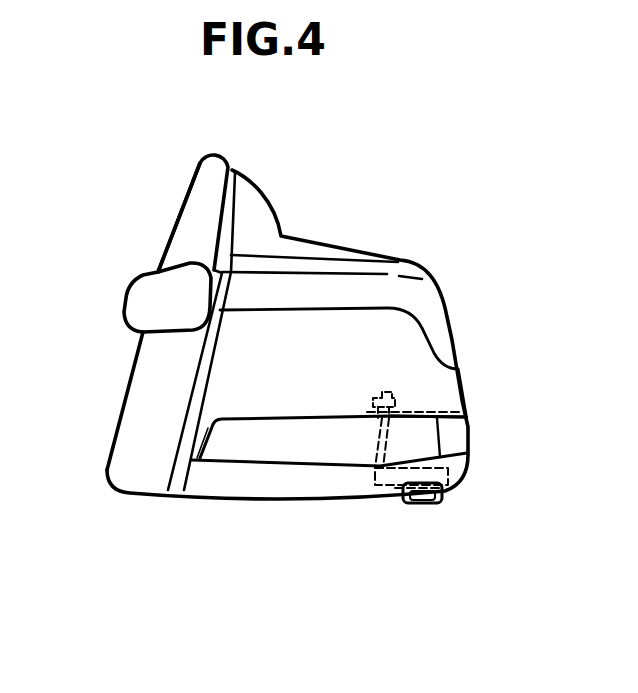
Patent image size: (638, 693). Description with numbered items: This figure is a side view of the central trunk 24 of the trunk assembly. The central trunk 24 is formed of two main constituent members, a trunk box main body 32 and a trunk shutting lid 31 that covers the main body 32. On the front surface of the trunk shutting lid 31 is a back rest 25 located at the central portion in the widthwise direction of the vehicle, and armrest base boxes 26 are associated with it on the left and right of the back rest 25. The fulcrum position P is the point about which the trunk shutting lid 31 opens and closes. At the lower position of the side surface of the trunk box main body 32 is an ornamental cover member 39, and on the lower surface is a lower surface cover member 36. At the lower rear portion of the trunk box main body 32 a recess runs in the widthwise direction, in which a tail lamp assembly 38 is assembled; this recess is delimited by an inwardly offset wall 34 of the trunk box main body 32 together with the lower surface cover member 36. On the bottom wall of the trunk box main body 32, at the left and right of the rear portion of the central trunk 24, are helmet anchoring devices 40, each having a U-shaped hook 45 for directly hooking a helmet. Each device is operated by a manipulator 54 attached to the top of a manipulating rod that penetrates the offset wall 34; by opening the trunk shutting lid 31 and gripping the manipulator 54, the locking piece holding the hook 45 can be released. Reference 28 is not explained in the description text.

The central trunk 24 is at (464, 250).
The back rest 25 is at (202, 170).
The armrest base box 26 is at (138, 305).
The headrest stay 28 is at (142, 257).
The fulcrum position P is at (123, 343).
The trunk shutting lid 31 is at (440, 320).
The trunk box main body 32 is at (453, 395).
The inwardly offset wall 34 is at (420, 410).
The lower surface cover member 36 is at (267, 487).
The tail lamp assembly 38 is at (460, 440).
The ornamental cover member 39 is at (323, 453).
The helmet anchoring device 40 is at (465, 497).
The U-shaped hook 45 is at (415, 503).
The manipulator 54 is at (380, 387).